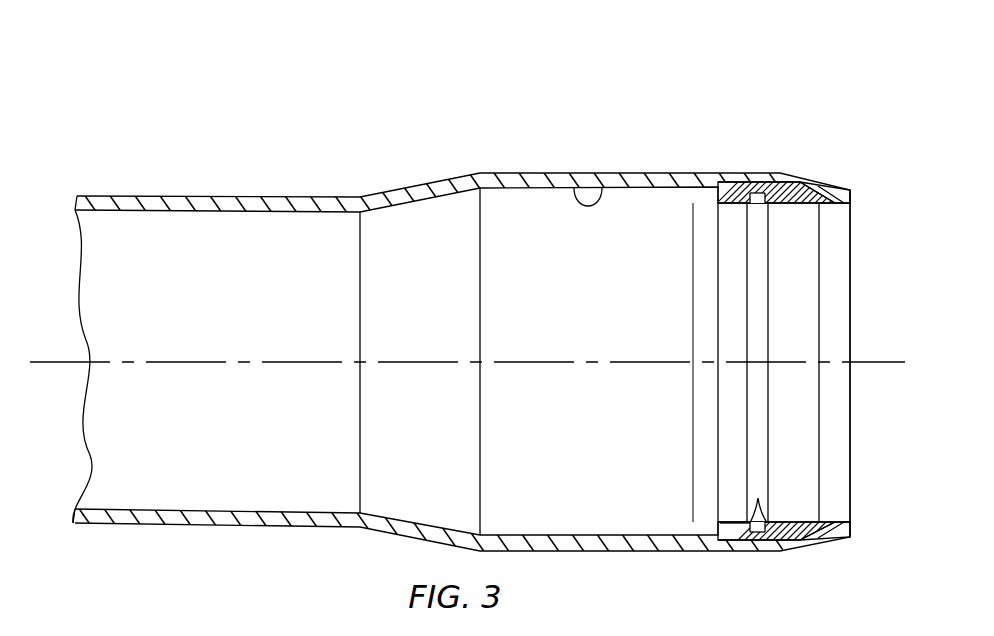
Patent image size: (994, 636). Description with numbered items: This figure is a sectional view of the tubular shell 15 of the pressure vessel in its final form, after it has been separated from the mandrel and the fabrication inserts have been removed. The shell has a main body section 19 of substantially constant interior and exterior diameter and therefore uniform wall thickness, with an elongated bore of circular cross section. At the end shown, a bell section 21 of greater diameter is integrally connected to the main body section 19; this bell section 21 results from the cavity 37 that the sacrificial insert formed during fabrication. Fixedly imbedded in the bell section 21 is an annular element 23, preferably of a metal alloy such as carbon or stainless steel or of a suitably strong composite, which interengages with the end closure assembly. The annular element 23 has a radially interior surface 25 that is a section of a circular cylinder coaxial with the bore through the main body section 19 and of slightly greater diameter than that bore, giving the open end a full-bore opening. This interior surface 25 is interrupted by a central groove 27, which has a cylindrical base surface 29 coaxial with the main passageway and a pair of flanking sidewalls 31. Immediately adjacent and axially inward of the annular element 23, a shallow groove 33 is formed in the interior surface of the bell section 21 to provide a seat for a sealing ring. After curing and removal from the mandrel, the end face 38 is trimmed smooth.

The tubular shell 15 is at (244, 78).
The main body section 19 is at (138, 196).
The bell section 21 is at (525, 177).
The annular element 23 is at (780, 182).
The radially interior surface 25 is at (733, 522).
The central groove 27 is at (758, 318).
The cylindrical base surface 29 is at (757, 195).
The flanking sidewalls 31 is at (759, 496).
The shallow groove 33 is at (703, 247).
The cavity 37 is at (598, 188).
The end face 38 is at (854, 198).